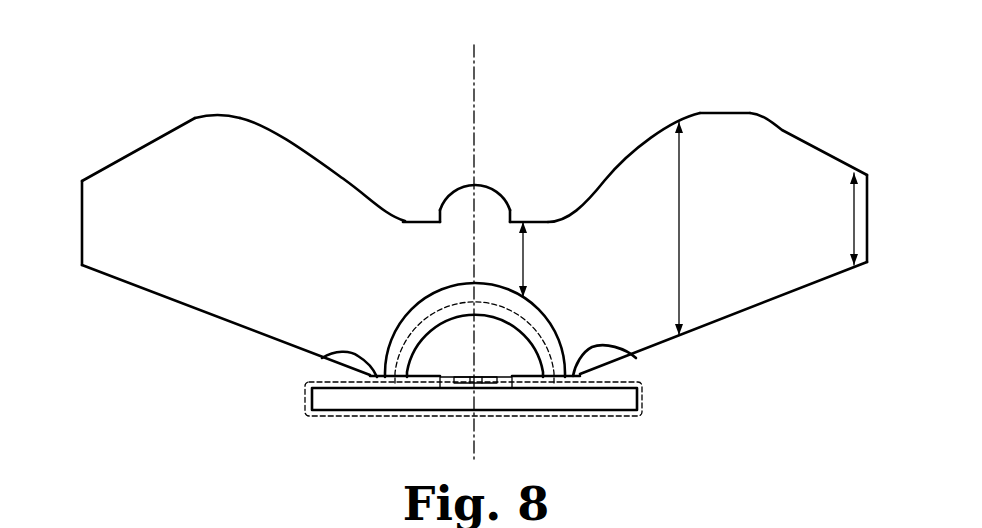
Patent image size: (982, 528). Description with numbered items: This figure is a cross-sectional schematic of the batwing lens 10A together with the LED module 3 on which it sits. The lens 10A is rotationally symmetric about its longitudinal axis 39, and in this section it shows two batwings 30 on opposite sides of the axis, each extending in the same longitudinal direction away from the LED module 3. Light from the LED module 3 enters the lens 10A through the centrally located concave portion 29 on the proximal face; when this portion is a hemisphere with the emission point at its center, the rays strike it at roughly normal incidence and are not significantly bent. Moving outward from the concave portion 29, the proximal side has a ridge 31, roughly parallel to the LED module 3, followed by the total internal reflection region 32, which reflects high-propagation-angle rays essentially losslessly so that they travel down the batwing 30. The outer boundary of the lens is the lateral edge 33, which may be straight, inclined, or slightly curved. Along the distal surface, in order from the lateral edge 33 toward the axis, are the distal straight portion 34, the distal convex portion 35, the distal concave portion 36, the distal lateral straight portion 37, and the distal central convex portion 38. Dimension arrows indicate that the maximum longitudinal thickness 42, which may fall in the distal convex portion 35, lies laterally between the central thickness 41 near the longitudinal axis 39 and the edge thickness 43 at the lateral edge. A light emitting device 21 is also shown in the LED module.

The batwing lens 10A is at (126, 66).
The LED module 3 is at (307, 396).
The light emitting device 21 is at (552, 340).
The concave portion 29 is at (394, 338).
The batwing 30 is at (197, 180).
The ridge 31 is at (325, 358).
The total internal reflection region 32 is at (243, 328).
The lateral edge 33 is at (82, 212).
The distal straight portion 34 is at (118, 158).
The distal convex portion 35 is at (235, 115).
The distal concave portion 36 is at (390, 212).
The distal lateral straight portion 37 is at (430, 217).
The distal central convex portion 38 is at (458, 186).
The longitudinal axis 39 is at (476, 92).
The central thickness 41 is at (525, 255).
The maximum longitudinal thickness 42 is at (681, 205).
The edge thickness 43 is at (850, 213).